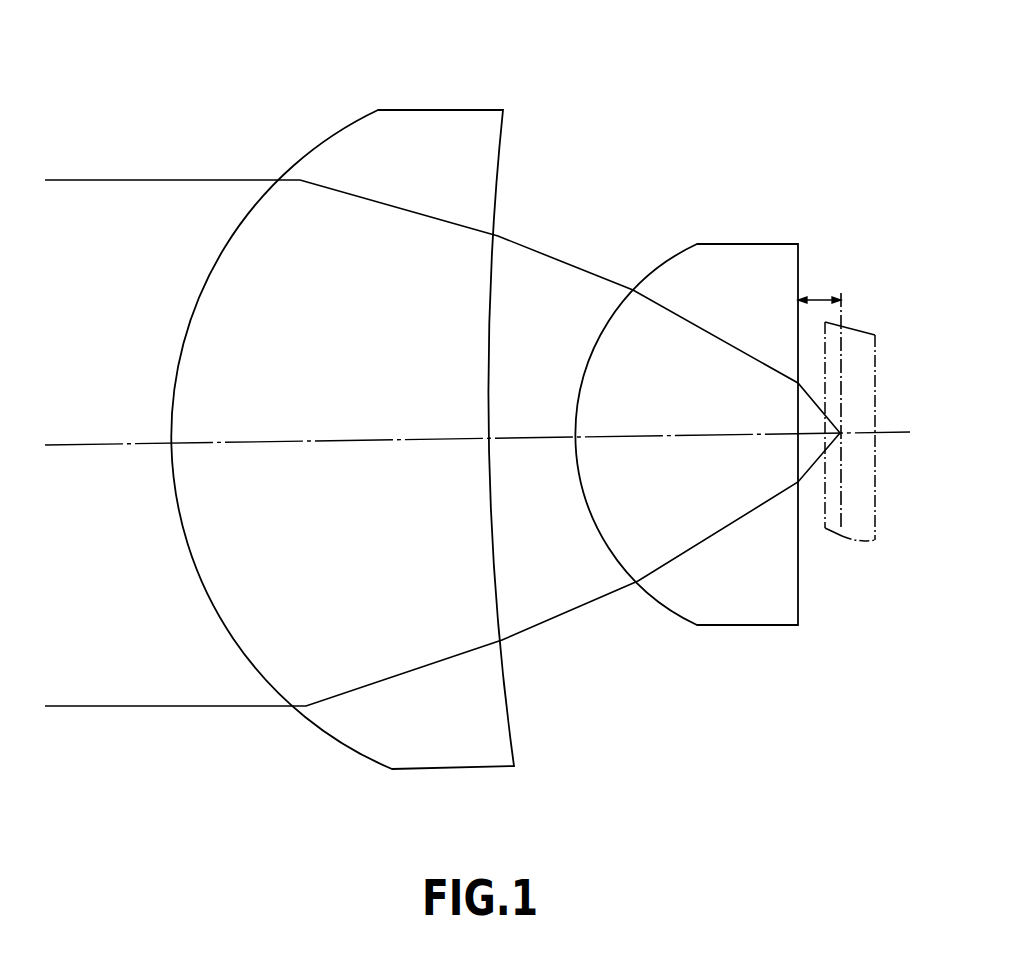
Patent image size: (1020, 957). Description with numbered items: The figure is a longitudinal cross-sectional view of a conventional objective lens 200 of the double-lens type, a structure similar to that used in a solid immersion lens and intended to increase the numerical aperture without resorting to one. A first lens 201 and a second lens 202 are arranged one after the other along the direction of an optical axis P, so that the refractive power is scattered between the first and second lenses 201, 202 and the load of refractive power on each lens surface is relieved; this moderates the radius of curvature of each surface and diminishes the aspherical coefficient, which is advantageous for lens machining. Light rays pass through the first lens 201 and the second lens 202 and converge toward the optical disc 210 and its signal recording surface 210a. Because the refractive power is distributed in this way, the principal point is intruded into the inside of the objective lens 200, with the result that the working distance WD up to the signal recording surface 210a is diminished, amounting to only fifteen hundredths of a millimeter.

The objective lens 200 is at (484, 385).
The first lens 201 is at (430, 133).
The second lens 202 is at (722, 258).
The optical disc 210 is at (860, 346).
The signal recording surface 210a is at (842, 510).
The optical axis P is at (893, 433).
The working distance WD is at (819, 287).